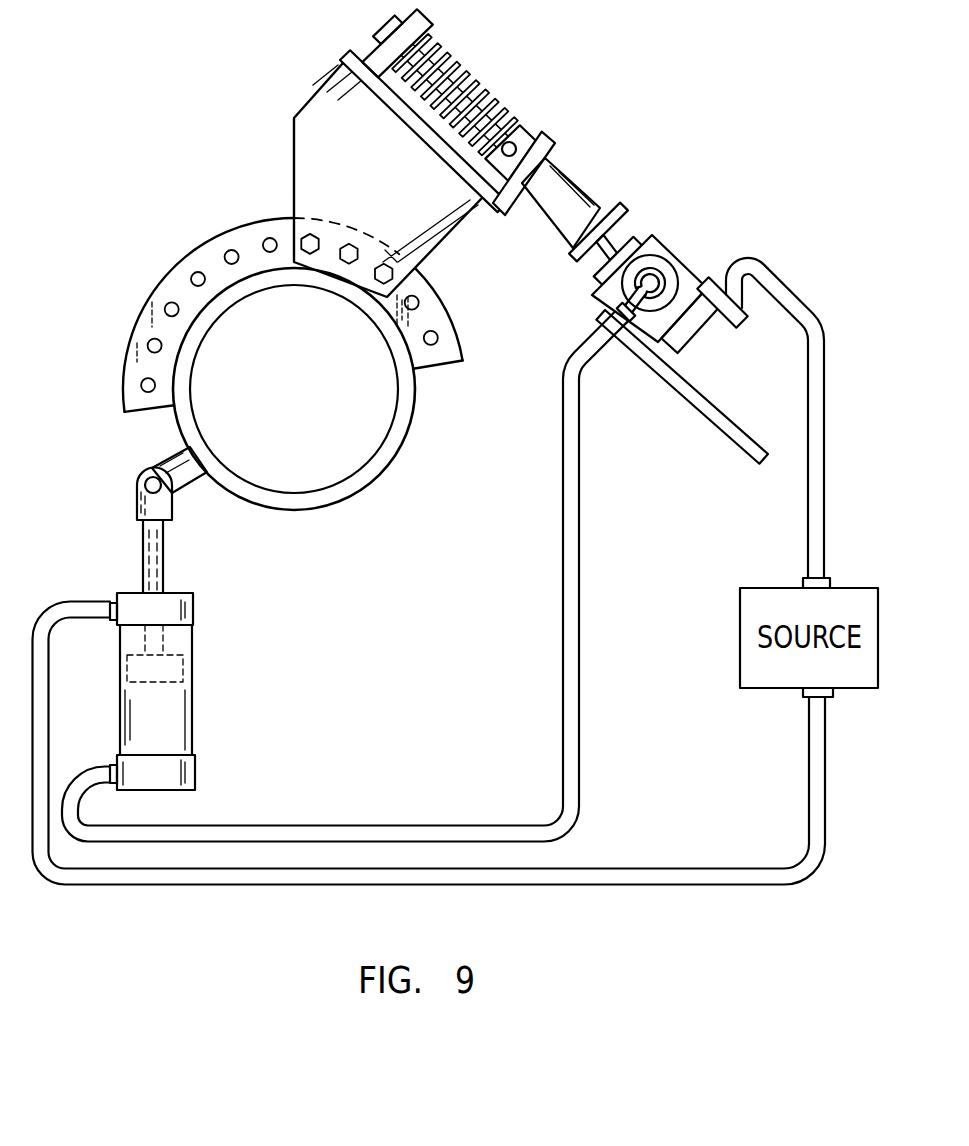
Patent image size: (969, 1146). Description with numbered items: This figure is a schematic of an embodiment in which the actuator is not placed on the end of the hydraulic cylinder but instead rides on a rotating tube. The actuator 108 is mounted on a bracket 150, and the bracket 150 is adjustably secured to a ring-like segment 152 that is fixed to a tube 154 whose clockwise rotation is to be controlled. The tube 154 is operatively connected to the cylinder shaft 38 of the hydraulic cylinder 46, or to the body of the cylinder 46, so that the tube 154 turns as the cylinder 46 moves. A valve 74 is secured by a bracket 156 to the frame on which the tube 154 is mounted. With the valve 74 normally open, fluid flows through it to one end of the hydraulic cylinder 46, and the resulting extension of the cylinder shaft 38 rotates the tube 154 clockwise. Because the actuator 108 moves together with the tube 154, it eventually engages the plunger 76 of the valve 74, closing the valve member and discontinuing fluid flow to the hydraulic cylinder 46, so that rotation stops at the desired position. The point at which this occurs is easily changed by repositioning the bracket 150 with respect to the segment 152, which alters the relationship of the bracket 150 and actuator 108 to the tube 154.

The cylinder shaft 38 is at (157, 557).
The hydraulic cylinder 46 is at (196, 698).
The valve 74 is at (686, 254).
The plunger 76 is at (613, 233).
The actuator 108 is at (577, 187).
The bracket 150 is at (333, 138).
The ring-like segment 152 is at (183, 290).
The tube 154 is at (183, 426).
The bracket 156 is at (718, 417).